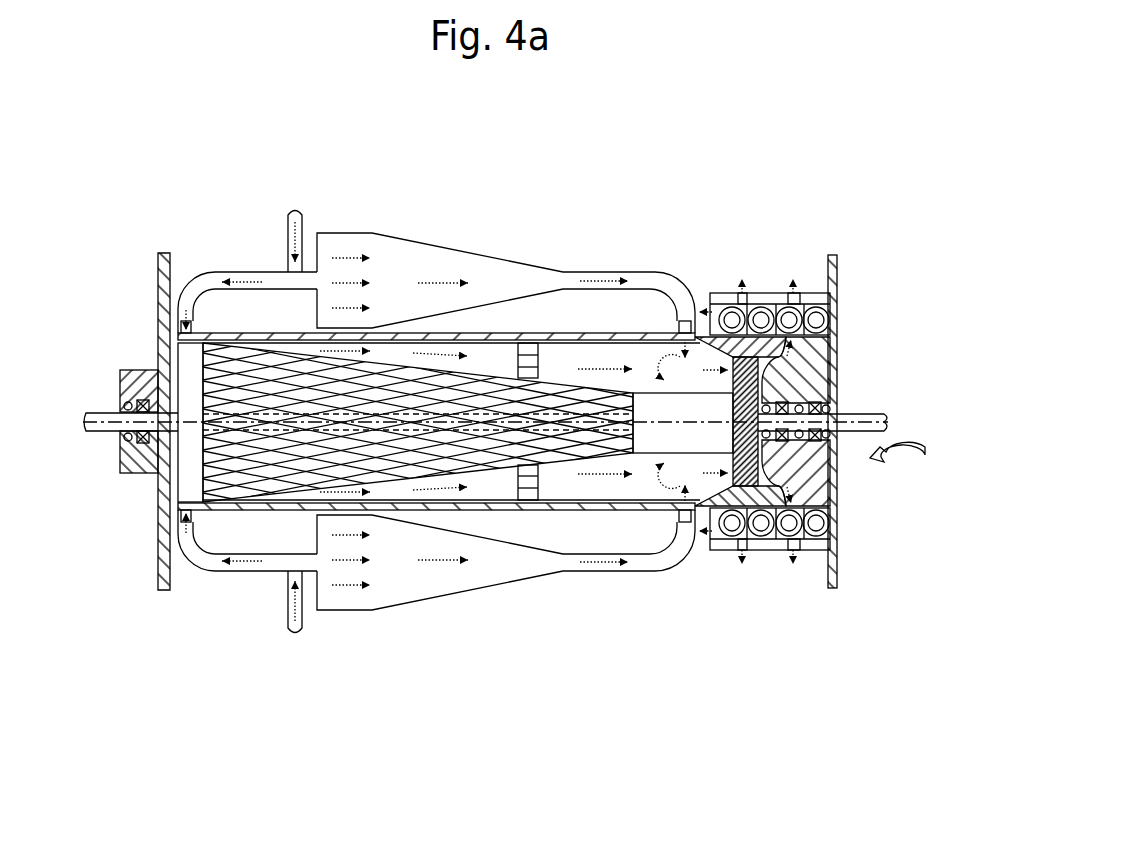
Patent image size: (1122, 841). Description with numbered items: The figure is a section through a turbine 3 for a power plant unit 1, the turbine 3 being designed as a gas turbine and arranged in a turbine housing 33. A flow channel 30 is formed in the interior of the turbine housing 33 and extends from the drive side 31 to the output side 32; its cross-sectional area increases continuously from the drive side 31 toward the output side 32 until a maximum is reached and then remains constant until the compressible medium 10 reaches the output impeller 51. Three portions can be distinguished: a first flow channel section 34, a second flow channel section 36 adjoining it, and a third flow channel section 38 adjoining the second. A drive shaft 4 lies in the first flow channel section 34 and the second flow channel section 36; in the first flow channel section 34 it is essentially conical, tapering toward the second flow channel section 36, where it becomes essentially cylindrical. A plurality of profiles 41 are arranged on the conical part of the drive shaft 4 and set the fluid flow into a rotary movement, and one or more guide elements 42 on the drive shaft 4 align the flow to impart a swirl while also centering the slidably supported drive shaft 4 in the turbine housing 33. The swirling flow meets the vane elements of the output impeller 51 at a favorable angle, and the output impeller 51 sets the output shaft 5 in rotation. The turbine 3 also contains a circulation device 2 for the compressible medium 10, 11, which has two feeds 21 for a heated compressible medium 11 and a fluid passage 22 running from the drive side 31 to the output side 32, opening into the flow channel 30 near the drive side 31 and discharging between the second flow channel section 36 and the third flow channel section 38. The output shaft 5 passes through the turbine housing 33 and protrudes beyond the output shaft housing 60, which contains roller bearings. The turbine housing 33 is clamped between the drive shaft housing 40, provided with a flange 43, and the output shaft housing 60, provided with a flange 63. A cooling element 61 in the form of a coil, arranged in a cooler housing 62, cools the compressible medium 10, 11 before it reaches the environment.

The power plant unit 1 is at (321, 103).
The circulation device 2 is at (440, 362).
The turbine 3 is at (418, 327).
The drive shaft 4 is at (349, 382).
The output shaft 5 is at (872, 420).
The compressible medium 10 is at (340, 661).
The heated compressible medium 11 is at (340, 661).
The feed 21 is at (264, 201).
The fluid passage 22 is at (436, 364).
The flow channel 30 is at (671, 544).
The drive side 31 is at (185, 538).
The output side 32 is at (832, 624).
The turbine housing 33 is at (439, 532).
The first flow channel section 34 is at (418, 508).
The second flow channel section 36 is at (683, 538).
The third flow channel section 38 is at (717, 250).
The drive shaft housing 40 is at (130, 318).
The profile 41 is at (524, 515).
The guide element 42 is at (534, 509).
The flange 43 is at (122, 527).
The output impeller 51 is at (755, 550).
The output shaft housing 60 is at (853, 415).
The cooling element 61 is at (820, 398).
The cooler housing 62 is at (764, 358).
The flange 63 is at (883, 421).